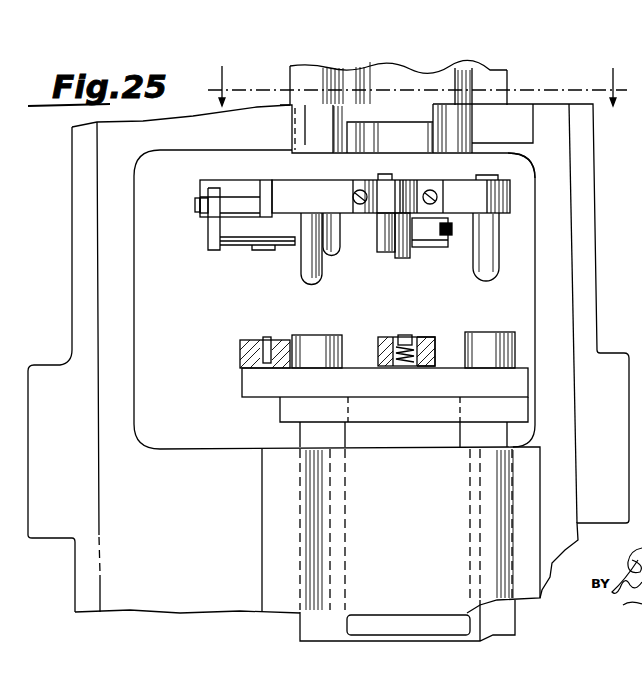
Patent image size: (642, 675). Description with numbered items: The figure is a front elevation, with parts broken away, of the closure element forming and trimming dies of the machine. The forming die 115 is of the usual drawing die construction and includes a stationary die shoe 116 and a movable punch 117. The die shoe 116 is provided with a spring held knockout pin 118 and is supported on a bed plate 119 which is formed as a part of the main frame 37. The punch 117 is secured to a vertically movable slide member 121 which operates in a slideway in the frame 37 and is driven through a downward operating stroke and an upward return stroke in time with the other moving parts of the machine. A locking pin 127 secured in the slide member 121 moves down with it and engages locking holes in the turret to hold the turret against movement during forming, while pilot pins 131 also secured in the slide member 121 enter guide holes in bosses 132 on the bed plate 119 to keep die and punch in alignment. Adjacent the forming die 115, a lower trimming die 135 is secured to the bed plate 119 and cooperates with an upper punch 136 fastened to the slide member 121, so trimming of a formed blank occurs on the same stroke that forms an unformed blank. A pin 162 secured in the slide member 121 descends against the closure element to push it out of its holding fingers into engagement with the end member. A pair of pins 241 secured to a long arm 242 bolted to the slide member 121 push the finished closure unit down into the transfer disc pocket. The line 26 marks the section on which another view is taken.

The section line 26- 26 is at (417, 78).
The main frame 37 is at (578, 340).
The forming die 115 is at (427, 341).
The stationary die shoe 116 is at (387, 343).
The movable punch 117 is at (413, 235).
The knockout pin 118 is at (405, 337).
The bed plate 119 is at (510, 410).
The slide member 121 is at (418, 62).
The locking pin 127 is at (338, 248).
The pilot pins 131 is at (312, 255).
The bosses 132 is at (313, 350).
The lower trimming die 135 is at (240, 350).
The upper punch 136 is at (263, 252).
The pin 162 is at (208, 235).
The pins 241 is at (397, 258).
The long arm 242 is at (408, 193).